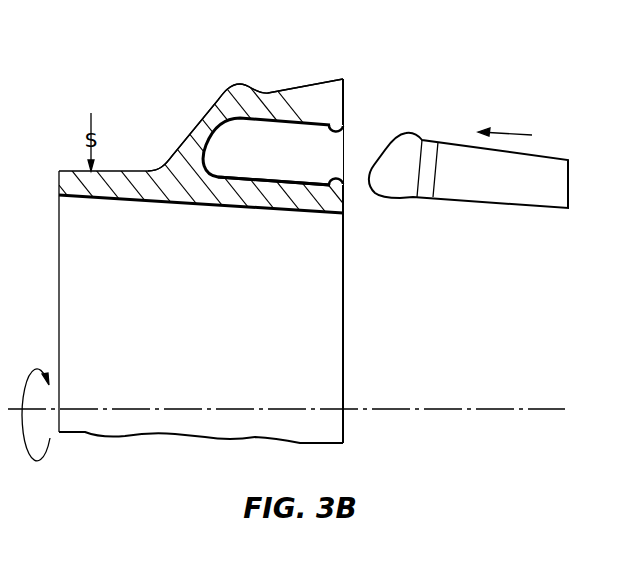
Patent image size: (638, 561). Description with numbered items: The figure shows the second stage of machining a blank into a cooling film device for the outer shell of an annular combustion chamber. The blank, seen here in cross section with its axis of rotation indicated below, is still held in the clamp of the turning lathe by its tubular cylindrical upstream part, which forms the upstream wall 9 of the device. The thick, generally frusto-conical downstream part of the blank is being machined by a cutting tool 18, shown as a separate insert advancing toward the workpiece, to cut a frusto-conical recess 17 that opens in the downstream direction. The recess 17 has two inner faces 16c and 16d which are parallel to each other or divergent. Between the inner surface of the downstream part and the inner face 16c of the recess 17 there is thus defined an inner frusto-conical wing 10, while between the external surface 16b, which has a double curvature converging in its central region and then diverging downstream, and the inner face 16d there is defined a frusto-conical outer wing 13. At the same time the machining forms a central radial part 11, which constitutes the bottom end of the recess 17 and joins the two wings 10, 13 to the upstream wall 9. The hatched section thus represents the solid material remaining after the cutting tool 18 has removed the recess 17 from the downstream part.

The upstream wall 9 is at (97, 192).
The inner frusto-conical wing 10 is at (287, 203).
The central radial part 11 is at (203, 122).
The frusto-conical outer wing 13 is at (265, 98).
The external surface 16b is at (334, 82).
The inner face 16c is at (347, 185).
The inner face 16d is at (345, 138).
The frusto-conical recess 17 is at (253, 157).
The cutting tool 18 is at (467, 188).